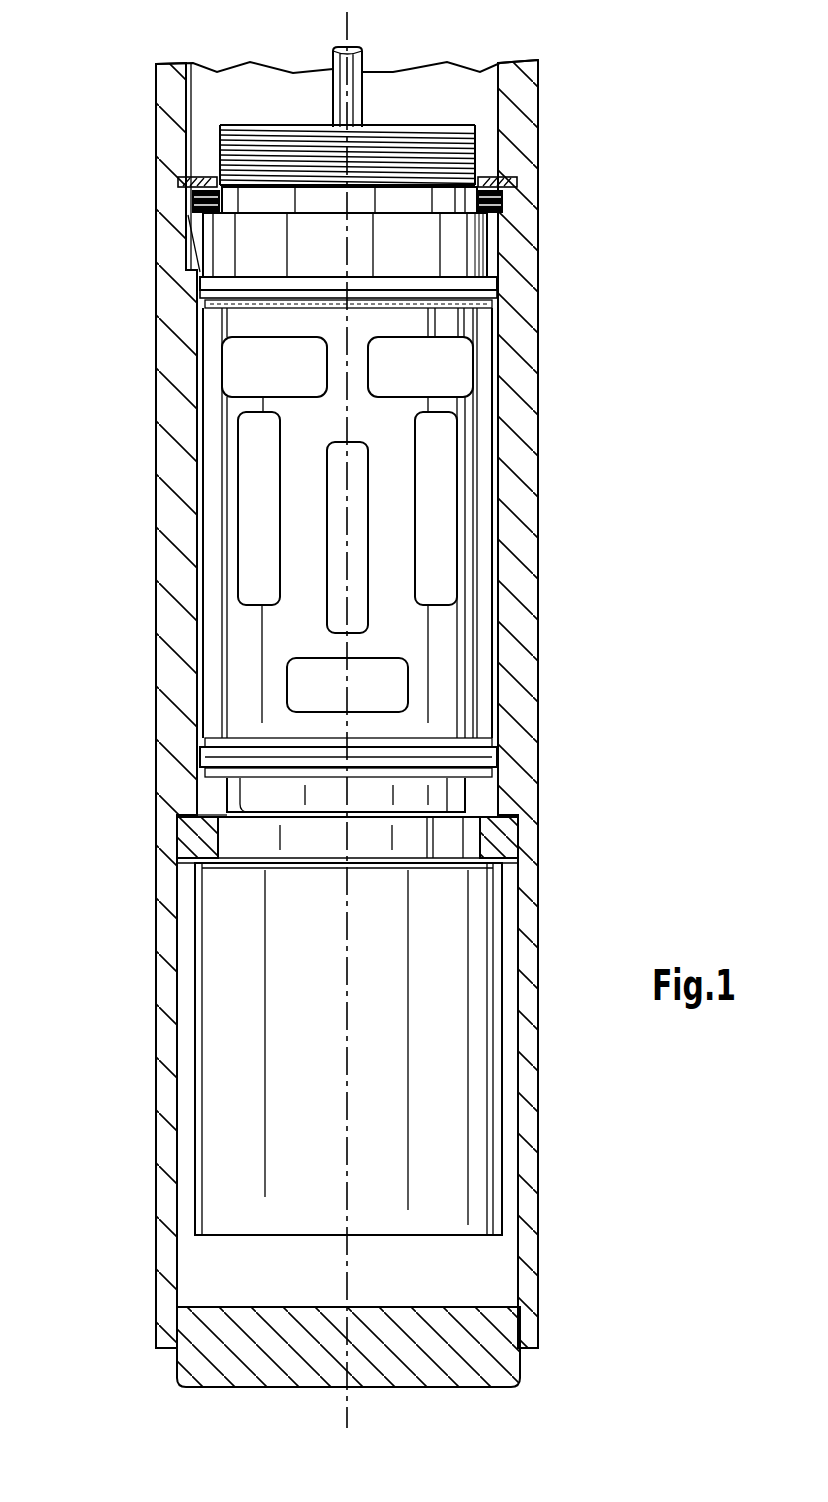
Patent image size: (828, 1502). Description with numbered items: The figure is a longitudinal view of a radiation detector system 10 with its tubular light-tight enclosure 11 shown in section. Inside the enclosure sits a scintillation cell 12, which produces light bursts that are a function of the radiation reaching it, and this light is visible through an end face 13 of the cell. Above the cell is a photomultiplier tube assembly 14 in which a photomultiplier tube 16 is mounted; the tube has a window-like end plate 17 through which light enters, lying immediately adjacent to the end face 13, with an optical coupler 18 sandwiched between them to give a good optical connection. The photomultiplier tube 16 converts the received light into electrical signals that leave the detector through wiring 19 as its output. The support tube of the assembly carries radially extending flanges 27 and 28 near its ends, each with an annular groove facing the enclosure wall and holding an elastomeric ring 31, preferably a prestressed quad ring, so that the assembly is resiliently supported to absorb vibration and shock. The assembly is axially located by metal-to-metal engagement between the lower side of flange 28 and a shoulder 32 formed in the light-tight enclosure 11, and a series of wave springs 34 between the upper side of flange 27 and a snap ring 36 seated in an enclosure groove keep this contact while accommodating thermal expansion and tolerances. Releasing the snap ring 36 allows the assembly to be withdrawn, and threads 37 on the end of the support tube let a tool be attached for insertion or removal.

The radiation detector system 10 is at (566, 428).
The light-tight enclosure 11 is at (523, 579).
The scintillation cell 12 is at (445, 1140).
The end face 13 is at (365, 810).
The photomultiplier tube assembly 14 is at (494, 674).
The photomultiplier tube 16 is at (257, 795).
The end plate 17 is at (315, 812).
The optical coupler 18 is at (365, 810).
The wiring 19 is at (357, 92).
The flange 27 is at (482, 263).
The flange 28 is at (487, 780).
The elastomeric rings 31 is at (494, 290).
The shoulder 32 is at (217, 792).
The wave springs 34 is at (187, 200).
The snap ring 36 is at (515, 178).
The threads 37 is at (473, 150).